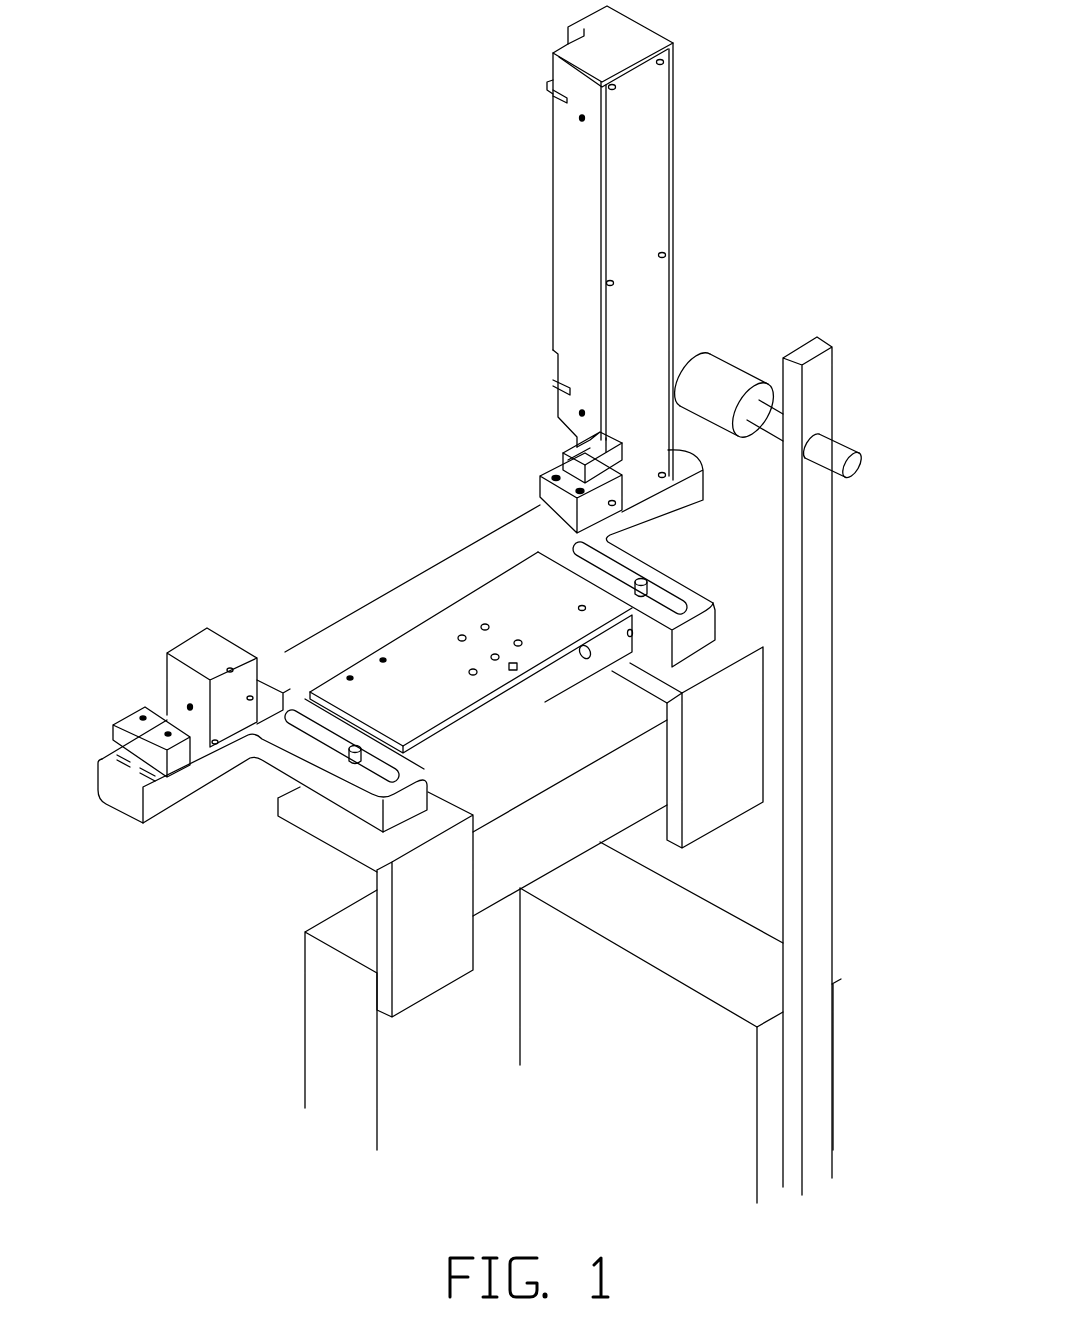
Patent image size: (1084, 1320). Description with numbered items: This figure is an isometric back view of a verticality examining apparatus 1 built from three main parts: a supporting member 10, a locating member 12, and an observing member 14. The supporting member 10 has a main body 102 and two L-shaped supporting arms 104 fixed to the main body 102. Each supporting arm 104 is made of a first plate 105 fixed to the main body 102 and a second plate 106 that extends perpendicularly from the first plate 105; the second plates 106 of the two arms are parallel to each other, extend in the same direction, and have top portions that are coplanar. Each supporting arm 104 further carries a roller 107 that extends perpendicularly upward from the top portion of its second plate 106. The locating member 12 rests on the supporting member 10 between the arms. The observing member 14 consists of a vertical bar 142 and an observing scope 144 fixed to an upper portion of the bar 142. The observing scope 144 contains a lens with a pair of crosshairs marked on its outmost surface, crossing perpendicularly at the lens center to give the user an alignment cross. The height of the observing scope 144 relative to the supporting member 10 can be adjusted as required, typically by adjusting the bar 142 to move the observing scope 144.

The verticality examining apparatus 1 is at (358, 126).
The supporting member 10 is at (630, 1120).
The main body 102 is at (335, 1030).
The supporting arm 104 is at (735, 650).
The first plate 105 is at (410, 888).
The second plate 106 is at (290, 812).
The roller 107 is at (357, 760).
The locating member 12 is at (325, 567).
The observing member 14 is at (850, 412).
The vertical bar 142 is at (818, 634).
The observing scope 144 is at (728, 377).